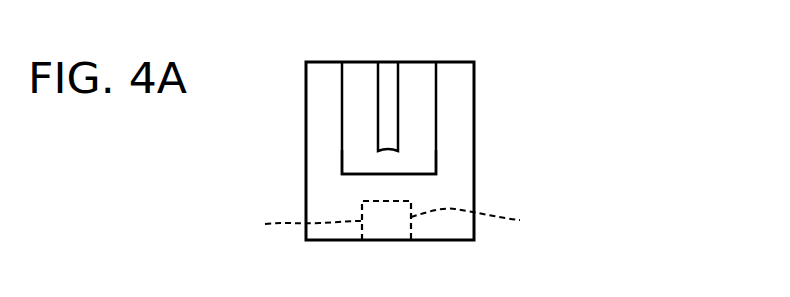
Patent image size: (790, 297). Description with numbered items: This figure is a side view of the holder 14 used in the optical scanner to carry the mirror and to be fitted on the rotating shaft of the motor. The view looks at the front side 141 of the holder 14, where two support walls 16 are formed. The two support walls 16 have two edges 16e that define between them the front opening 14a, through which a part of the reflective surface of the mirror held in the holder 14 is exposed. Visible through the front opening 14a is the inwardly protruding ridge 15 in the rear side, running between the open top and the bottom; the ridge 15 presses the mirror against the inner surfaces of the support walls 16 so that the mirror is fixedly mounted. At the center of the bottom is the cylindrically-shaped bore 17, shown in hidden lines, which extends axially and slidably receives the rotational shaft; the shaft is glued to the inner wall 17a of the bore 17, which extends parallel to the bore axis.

The holder 14 is at (572, 43).
The front opening 14a is at (420, 77).
The front side 141 is at (522, 123).
The ridge 15 is at (388, 72).
The support wall 16 is at (323, 115).
The edge 16e is at (342, 145).
The cylindrically-shaped bore 17 is at (392, 226).
The inner wall 17a is at (391, 222).